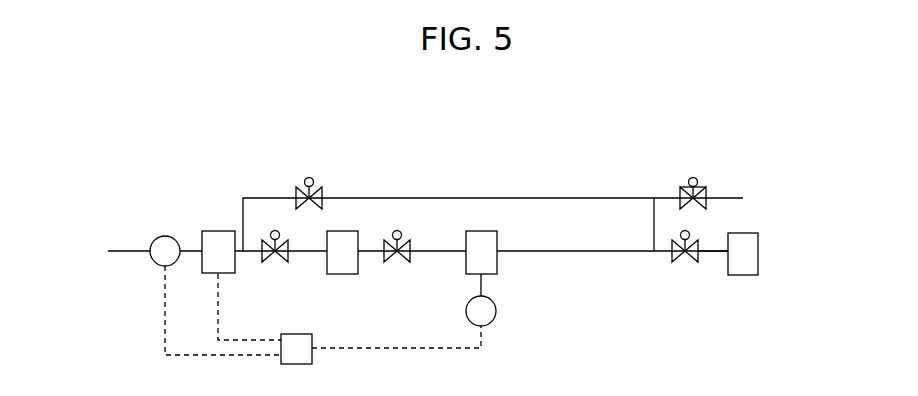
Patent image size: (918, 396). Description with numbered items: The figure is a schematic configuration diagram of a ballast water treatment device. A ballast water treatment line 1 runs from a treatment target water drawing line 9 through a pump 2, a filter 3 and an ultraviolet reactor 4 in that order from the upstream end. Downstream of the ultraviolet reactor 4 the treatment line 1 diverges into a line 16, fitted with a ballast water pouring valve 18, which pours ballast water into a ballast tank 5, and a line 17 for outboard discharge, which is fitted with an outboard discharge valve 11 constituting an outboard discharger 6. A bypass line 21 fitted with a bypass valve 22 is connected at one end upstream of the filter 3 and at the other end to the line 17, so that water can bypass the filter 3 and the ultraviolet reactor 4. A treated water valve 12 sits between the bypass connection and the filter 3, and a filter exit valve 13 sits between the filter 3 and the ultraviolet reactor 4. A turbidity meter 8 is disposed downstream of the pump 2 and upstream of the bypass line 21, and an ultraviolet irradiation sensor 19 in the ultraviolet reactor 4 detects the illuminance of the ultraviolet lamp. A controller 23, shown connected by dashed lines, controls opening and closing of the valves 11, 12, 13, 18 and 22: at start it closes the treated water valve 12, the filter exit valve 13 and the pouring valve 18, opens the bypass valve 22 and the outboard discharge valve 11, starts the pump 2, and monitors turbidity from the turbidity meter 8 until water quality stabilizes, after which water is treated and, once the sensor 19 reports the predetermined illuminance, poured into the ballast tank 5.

The ballast water treatment line 1 is at (190, 251).
The pump 2 is at (165, 236).
The filter 3 is at (340, 274).
The ultraviolet reactor 4 is at (497, 272).
The ballast tank 5 is at (745, 275).
The outboard discharger 6 is at (704, 182).
The turbidity meter 8 is at (218, 231).
The treatment target water drawing line 9 is at (126, 251).
The outboard discharge valve 11 is at (695, 179).
The treated water valve 12 is at (279, 234).
The filter exit valve 13 is at (401, 234).
The line 16 is at (712, 253).
The line 17 is at (654, 232).
The ballast water pouring valve 18 is at (689, 235).
The ultraviolet irradiation sensor 19 is at (496, 311).
The bypass line 21 is at (355, 198).
The bypass valve 22 is at (309, 178).
The controller 23 is at (297, 334).